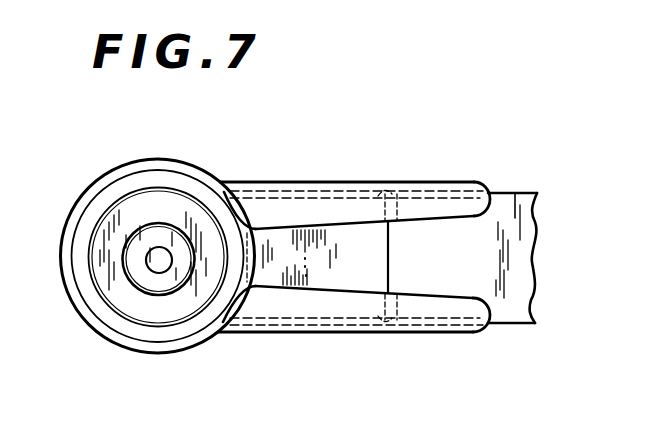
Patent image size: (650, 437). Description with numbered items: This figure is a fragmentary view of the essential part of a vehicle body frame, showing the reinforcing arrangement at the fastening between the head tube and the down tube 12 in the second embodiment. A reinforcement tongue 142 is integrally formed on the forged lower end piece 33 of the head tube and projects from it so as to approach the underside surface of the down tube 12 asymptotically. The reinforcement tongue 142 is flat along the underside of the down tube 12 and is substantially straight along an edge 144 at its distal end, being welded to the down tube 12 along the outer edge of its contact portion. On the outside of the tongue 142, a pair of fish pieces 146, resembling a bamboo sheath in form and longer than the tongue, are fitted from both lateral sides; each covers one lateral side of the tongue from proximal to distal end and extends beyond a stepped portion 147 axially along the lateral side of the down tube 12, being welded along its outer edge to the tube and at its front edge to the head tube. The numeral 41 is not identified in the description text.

The down tube 12 is at (523, 203).
The forged lower end piece 33 is at (165, 357).
The outer rim of hub 41 is at (80, 315).
The reinforcement tongue 142 is at (285, 247).
The edge 144 is at (387, 273).
The fish pieces 146 is at (320, 207).
The stepped portion 147 is at (398, 197).